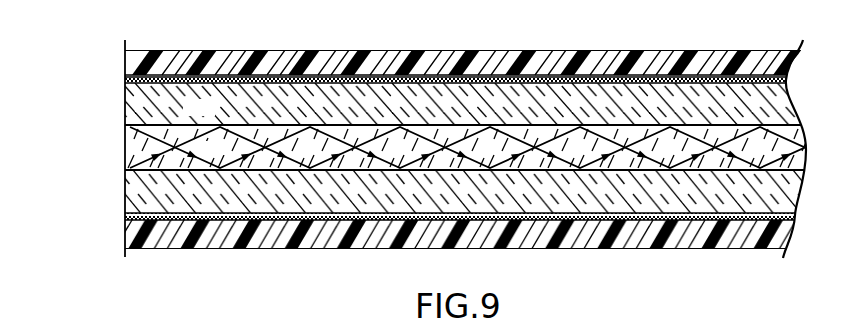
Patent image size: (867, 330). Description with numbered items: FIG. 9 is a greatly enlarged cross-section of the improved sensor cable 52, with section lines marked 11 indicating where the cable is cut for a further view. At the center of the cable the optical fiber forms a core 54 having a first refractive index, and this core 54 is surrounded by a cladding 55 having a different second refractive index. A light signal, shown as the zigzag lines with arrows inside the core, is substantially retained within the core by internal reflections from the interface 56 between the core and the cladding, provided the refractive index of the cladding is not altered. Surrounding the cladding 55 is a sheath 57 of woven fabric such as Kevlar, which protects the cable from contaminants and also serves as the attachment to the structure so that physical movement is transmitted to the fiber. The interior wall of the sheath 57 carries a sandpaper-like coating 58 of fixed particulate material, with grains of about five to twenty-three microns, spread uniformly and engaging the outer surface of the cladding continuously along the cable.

The sensor cable 52 is at (83, 61).
The core 54 is at (140, 152).
The cladding 55 is at (140, 100).
The interface 56 is at (345, 126).
The sheath 57 is at (423, 77).
The coating 58 is at (502, 86).
The section line 11- 11 is at (598, 287).